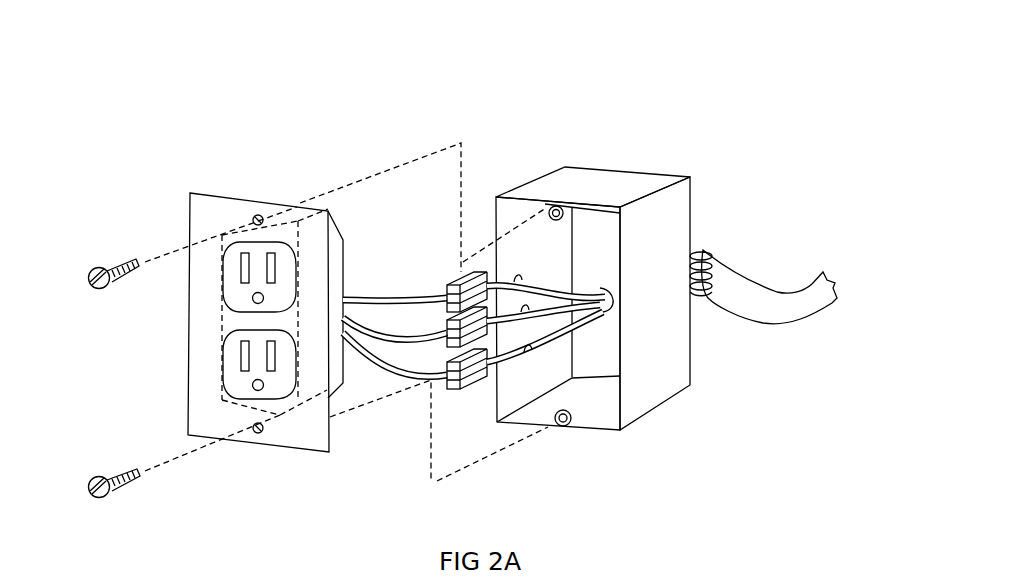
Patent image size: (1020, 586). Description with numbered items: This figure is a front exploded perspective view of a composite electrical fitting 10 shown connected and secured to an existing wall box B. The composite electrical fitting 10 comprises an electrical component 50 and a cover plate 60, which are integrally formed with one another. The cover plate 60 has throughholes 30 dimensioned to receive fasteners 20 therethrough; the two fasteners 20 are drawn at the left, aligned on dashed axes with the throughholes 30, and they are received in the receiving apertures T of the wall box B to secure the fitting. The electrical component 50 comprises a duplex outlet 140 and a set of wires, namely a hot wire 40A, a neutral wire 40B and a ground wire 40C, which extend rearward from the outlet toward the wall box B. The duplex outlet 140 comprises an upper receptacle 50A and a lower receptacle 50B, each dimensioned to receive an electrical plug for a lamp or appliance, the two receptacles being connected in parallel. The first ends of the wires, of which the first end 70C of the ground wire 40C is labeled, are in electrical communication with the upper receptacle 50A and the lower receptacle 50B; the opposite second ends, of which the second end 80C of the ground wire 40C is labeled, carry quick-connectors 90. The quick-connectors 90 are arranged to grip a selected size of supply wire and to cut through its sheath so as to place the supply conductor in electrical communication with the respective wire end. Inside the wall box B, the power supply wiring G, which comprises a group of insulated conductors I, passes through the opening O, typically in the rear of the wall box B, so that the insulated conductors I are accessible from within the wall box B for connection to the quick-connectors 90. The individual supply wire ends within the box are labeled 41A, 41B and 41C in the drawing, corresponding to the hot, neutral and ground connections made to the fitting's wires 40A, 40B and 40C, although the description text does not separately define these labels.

The composite electrical fitting 10 is at (237, 96).
The fasteners 20 is at (93, 268).
The throughholes 30 is at (258, 214).
The hot wire 40A is at (373, 303).
The neutral wire 40B is at (376, 320).
The ground wire 40C is at (388, 352).
The box wire conductor 41A is at (530, 290).
The box wire conductor 41B is at (568, 285).
The box wire conductor 41C is at (603, 285).
The electrical component 50 is at (340, 275).
The upper receptacle 50A is at (233, 290).
The lower receptacle 50B is at (271, 394).
The cover plate 60 is at (207, 418).
The first end 70C is at (348, 322).
The second end 80C is at (430, 377).
The quick-connectors 90 is at (445, 362).
The duplex outlet 140 is at (346, 208).
The receiving apertures T is at (550, 203).
The opening O is at (665, 240).
The power supply wiring G is at (752, 282).
The wall box B is at (692, 328).
The insulated conductors I is at (516, 278).